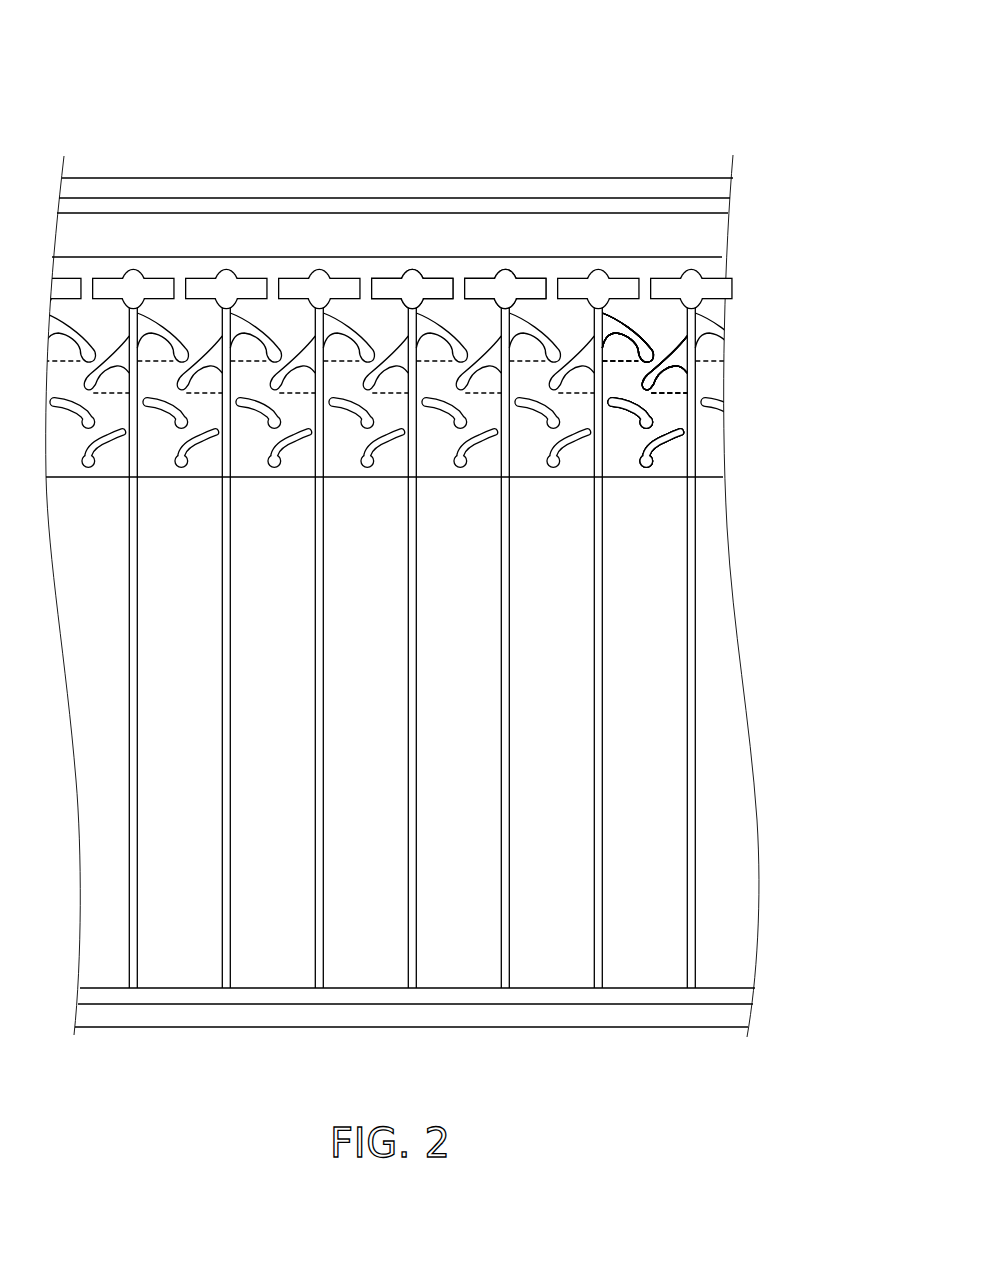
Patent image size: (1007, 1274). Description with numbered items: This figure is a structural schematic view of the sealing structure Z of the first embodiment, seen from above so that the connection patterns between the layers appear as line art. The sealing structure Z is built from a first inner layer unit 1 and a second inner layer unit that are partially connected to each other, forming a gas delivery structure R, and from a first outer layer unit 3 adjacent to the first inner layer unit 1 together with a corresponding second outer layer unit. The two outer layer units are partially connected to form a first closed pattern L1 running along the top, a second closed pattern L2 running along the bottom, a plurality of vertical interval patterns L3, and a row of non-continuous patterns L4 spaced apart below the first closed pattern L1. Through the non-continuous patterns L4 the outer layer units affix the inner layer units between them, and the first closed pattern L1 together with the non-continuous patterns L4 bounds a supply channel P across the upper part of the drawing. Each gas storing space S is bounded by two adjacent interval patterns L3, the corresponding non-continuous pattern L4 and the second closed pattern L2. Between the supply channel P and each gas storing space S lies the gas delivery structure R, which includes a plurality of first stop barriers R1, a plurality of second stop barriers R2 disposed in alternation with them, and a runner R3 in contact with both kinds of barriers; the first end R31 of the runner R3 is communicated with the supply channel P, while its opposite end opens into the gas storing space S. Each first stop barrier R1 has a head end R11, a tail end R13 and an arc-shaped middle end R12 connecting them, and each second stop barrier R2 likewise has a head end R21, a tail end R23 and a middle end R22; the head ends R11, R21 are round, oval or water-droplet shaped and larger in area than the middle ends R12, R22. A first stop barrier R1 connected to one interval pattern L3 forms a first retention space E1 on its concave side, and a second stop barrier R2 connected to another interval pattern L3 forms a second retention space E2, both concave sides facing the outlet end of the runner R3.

The sealing structure Z is at (108, 140).
The first inner layer unit 1 is at (530, 277).
The first outer layer unit 3 is at (647, 763).
The gas storing space S is at (658, 860).
The supply channel P is at (712, 230).
The first closed pattern L1 is at (483, 207).
The second closed pattern L2 is at (573, 997).
The interval patterns L3 is at (503, 967).
The non-continuous patterns L4 is at (202, 290).
The gas delivery structure R is at (362, 3).
The first stop barriers R1 is at (723, 131).
The head end R11 is at (650, 348).
The middle end R12 is at (643, 343).
The tail end R13 is at (612, 332).
The second stop barriers R2 is at (797, 388).
The head end R21 is at (647, 383).
The middle end R22 is at (678, 373).
The tail end R23 is at (673, 340).
The runner R3 is at (520, 283).
The first end R31 is at (457, 287).
The first retention space E1 is at (620, 352).
The second retention space E2 is at (668, 390).